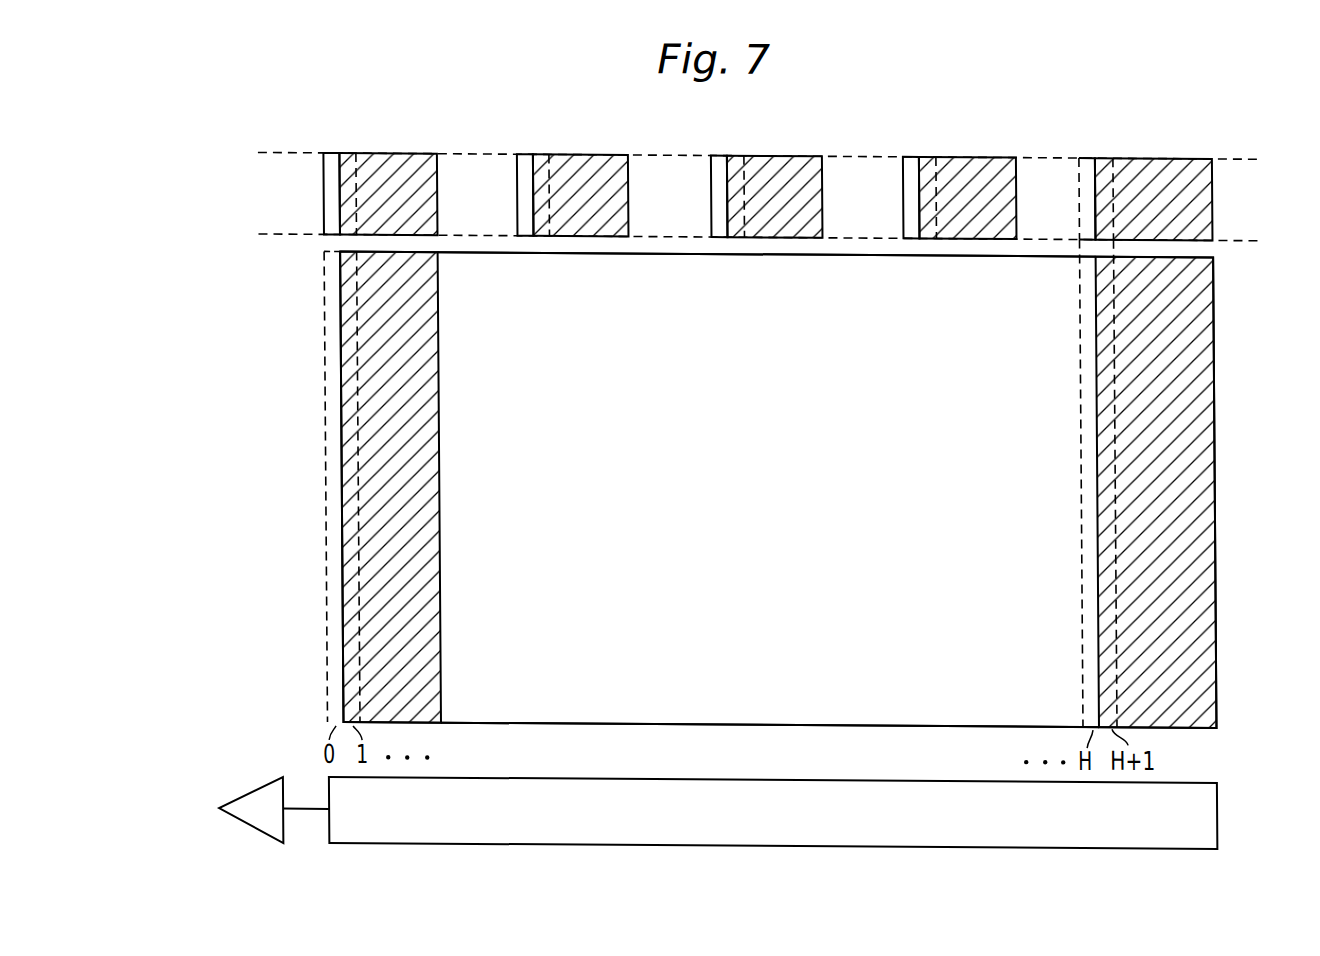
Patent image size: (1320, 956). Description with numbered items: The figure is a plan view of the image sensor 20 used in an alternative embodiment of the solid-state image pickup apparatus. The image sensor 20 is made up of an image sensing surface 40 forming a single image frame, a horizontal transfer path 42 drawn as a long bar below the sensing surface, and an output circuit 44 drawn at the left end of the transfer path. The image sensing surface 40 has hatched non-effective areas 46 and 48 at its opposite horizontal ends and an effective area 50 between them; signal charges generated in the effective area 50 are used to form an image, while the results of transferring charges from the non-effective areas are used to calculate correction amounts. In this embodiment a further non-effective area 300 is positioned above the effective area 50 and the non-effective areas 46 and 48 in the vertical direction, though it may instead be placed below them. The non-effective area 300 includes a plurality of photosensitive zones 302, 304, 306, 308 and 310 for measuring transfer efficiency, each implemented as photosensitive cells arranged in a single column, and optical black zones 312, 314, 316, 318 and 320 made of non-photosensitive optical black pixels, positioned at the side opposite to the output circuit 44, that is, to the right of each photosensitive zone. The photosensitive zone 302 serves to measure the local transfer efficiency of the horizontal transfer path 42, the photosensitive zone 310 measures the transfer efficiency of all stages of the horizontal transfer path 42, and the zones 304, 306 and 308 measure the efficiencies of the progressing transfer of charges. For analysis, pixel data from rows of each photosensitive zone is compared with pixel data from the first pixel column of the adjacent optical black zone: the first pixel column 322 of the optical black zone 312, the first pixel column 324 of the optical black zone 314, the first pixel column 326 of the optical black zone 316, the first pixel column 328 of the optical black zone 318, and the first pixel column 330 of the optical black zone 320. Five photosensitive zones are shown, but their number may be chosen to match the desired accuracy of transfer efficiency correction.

The image sensor 20 is at (168, 845).
The image sensing surface 40 is at (1217, 672).
The horizontal transfer path 42 is at (1216, 811).
The output circuit 44 is at (256, 788).
The non-effective area 46 is at (352, 418).
The non-effective area 48 is at (1203, 398).
The effective area 50 is at (743, 702).
The non-effective area 300 is at (280, 157).
The photosensitive zone 302 is at (336, 159).
The photosensitive zone 304 is at (529, 163).
The photosensitive zone 306 is at (723, 163).
The photosensitive zone 308 is at (915, 163).
The photosensitive zone 310 is at (1091, 163).
The optical black zone 312 is at (428, 208).
The optical black zone 314 is at (619, 209).
The optical black zone 316 is at (812, 209).
The optical black zone 318 is at (1006, 210).
The optical black zone 320 is at (1203, 216).
The first pixel column 322 is at (352, 155).
The first pixel column 324 is at (545, 159).
The first pixel column 326 is at (739, 159).
The first pixel column 328 is at (931, 159).
The first pixel column 330 is at (1107, 159).